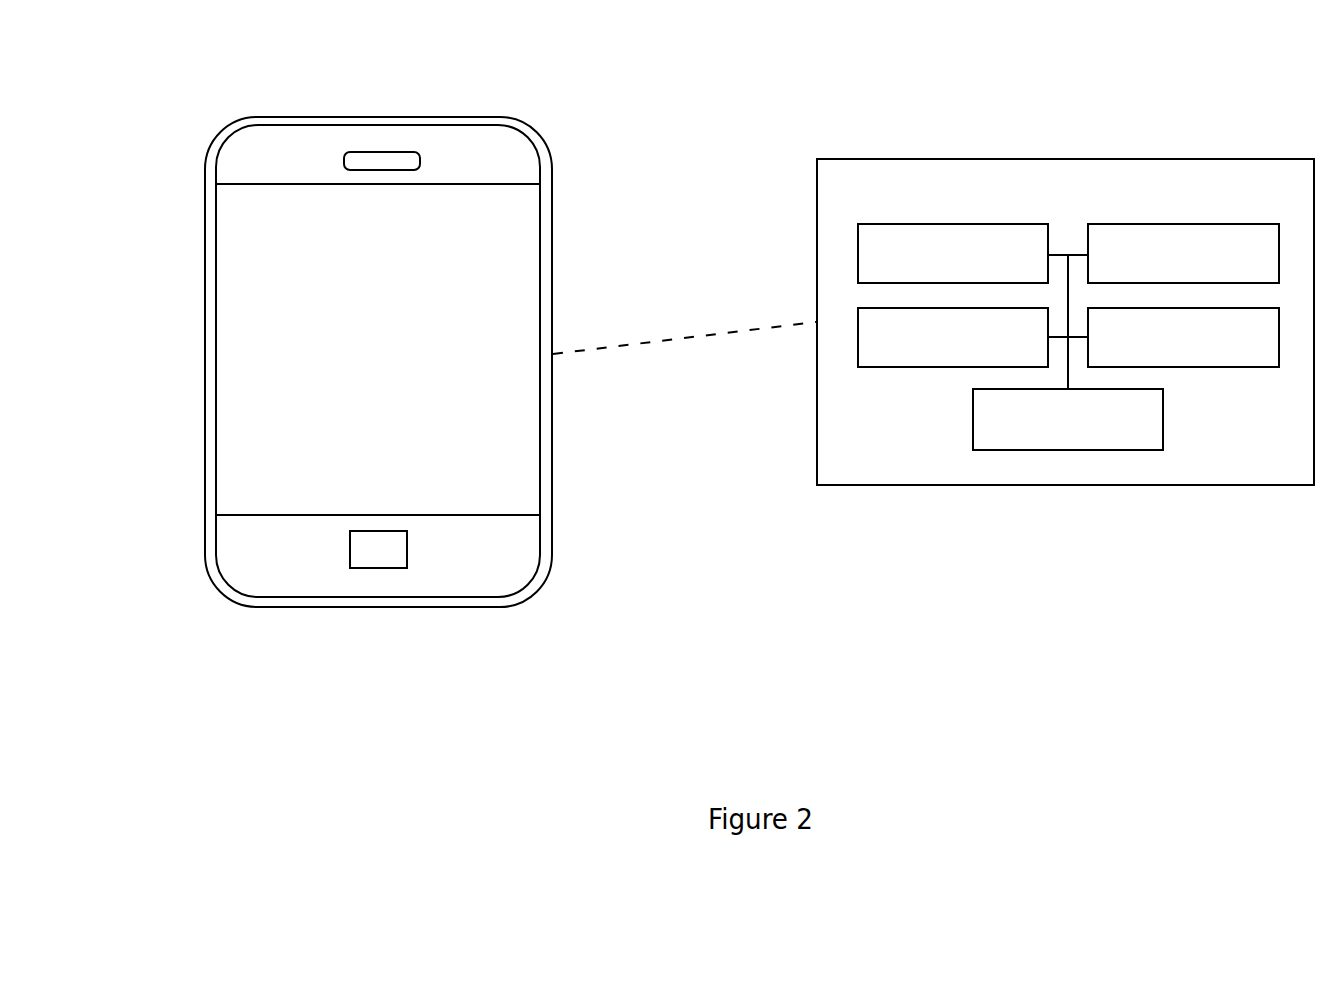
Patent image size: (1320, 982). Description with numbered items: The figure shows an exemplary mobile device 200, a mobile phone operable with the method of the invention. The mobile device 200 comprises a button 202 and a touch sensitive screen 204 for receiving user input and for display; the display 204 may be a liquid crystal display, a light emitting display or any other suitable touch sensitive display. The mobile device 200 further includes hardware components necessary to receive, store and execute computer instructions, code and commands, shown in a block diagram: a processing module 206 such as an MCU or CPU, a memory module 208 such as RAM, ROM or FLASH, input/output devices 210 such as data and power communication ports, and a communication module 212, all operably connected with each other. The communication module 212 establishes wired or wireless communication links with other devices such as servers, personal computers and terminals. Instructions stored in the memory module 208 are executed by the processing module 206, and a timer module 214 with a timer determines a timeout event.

The mobile device 200 is at (250, 93).
The button 202 is at (384, 555).
The touch sensitive screen 204 is at (517, 232).
The processing module 206 is at (953, 253).
The memory module 208 is at (1183, 253).
The input/output devices 210 is at (953, 337).
The communication module 212 is at (1183, 337).
The timer module 214 is at (1068, 419).